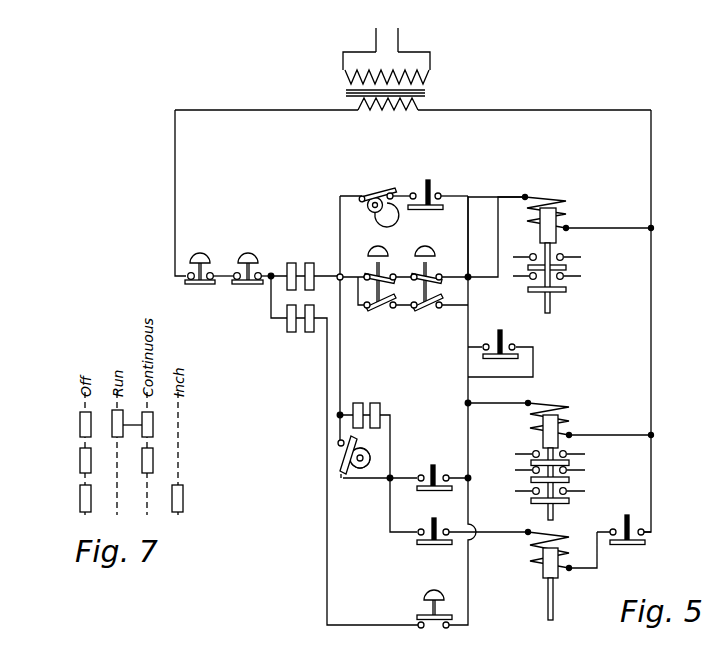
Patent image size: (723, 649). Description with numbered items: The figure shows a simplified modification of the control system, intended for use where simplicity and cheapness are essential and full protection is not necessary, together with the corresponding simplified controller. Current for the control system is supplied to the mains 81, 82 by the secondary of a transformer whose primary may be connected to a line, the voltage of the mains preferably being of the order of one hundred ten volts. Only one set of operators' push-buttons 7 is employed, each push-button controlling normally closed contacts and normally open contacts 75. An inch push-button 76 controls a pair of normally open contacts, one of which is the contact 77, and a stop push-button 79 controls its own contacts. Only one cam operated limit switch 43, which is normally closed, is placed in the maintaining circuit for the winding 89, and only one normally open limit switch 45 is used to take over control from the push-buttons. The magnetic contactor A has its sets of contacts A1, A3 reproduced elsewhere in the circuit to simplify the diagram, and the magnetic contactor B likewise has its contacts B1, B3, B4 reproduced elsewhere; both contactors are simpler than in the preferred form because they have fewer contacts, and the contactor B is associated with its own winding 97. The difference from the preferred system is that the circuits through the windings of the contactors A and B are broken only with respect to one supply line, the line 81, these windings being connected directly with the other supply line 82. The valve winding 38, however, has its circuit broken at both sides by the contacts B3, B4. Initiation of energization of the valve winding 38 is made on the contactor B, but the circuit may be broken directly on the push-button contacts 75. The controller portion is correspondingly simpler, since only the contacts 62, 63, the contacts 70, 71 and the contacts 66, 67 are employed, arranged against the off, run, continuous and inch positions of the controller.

In FIG. 5, the main 81 is at (178, 216).
In FIG. 5, the main 82 is at (652, 198).
In FIG. 5, the stop push-button 79 is at (213, 257).
In FIG. 5, the contact 62 is at (291, 263).
In FIG. 7, the contact 62 is at (88, 420).
In FIG. 5, the contact 63 is at (310, 263).
In FIG. 5, the contact 70 is at (292, 332).
In FIG. 7, the contact 70 is at (88, 497).
In FIG. 5, the contact 71 is at (310, 332).
In FIG. 7, the contact 71 is at (180, 490).
In FIG. 5, the cam operated limit switch 43 is at (378, 190).
In FIG. 7, the cam operated limit switch 43 is at (118, 420).
In FIG. 5, the contacts A1 is at (434, 198).
In FIG. 5, the contacts A3 is at (566, 276).
In FIG. 5, the push-button 7 is at (424, 253).
In FIG. 5, the normally open contacts 75 is at (384, 311).
In FIG. 5, the winding 89 is at (566, 204).
In FIG. 5, the magnetic contactor A is at (527, 248).
In FIG. 5, the relay B coil 97 is at (569, 410).
In FIG. 5, the magnetic contactor B is at (523, 450).
In FIG. 5, the contacts B1 is at (562, 454).
In FIG. 5, the contacts B3 is at (567, 472).
In FIG. 5, the contacts B4 is at (567, 492).
In FIG. 5, the valve winding 38 is at (531, 544).
In FIG. 5, the contact 66 is at (360, 403).
In FIG. 7, the contact 66 is at (89, 460).
In FIG. 5, the contact 67 is at (378, 403).
In FIG. 7, the contact 67 is at (150, 458).
In FIG. 5, the cam operated limit switch 45 is at (339, 449).
In FIG. 5, the inch push-button 76 is at (437, 596).
In FIG. 5, the normally open contact 77 is at (433, 630).